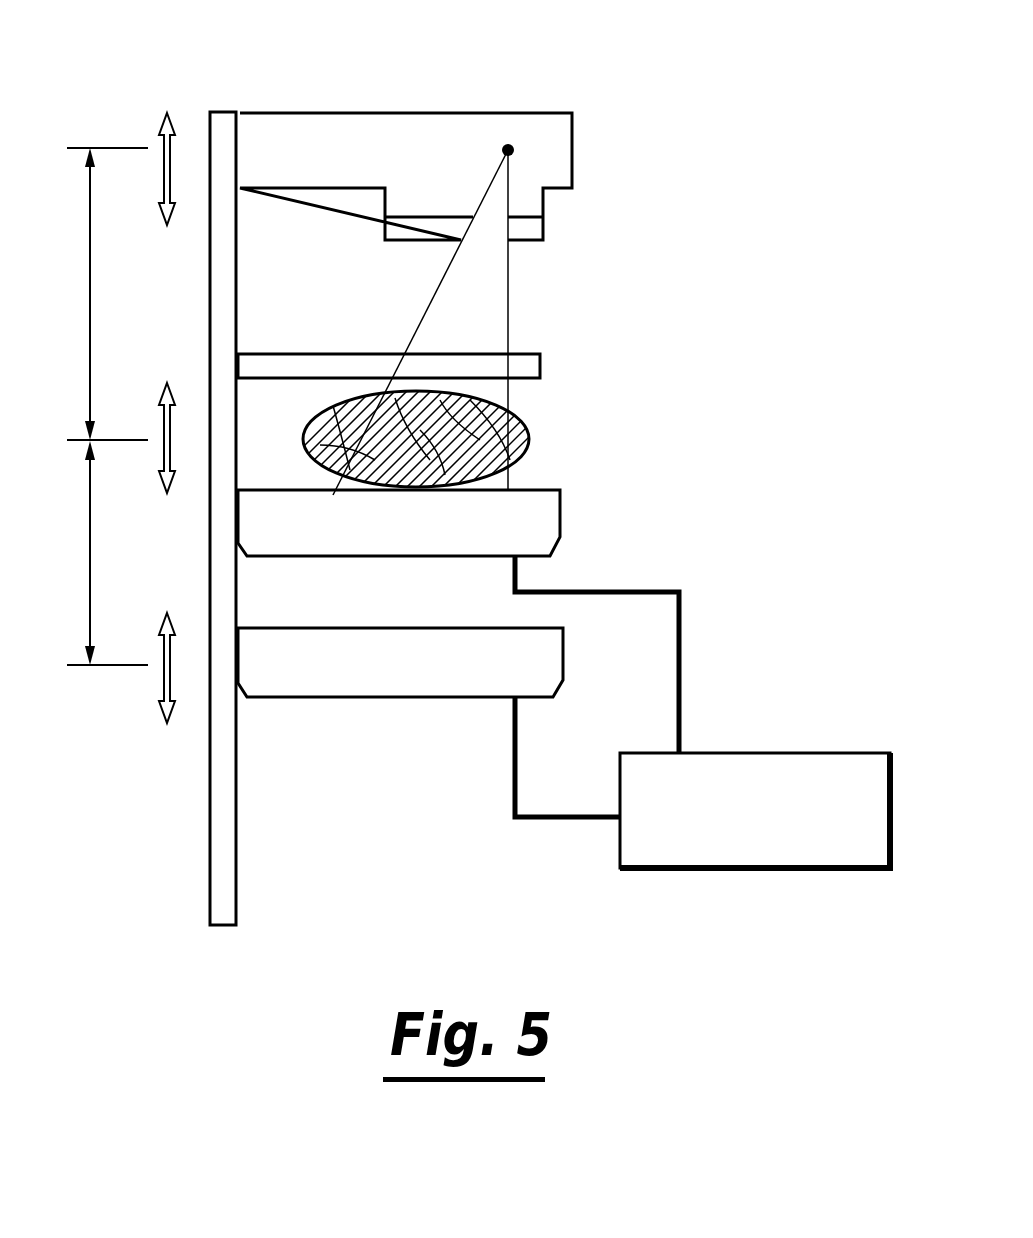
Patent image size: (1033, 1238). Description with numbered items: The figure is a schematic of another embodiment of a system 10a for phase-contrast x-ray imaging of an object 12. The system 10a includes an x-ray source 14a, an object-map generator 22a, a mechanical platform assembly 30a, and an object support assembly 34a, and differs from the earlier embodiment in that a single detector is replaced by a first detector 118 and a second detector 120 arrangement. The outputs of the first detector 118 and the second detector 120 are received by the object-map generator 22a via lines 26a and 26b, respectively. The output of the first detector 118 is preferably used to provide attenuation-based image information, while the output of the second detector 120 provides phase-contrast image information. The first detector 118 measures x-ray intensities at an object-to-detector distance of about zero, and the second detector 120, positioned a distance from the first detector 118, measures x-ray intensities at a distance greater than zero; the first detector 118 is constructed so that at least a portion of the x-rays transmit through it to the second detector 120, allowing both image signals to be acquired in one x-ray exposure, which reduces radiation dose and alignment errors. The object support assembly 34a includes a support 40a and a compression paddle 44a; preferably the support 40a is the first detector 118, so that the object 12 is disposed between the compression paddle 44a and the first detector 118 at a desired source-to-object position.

The system for phase-contrast imaging 10a is at (178, 65).
The object 12 is at (522, 436).
The x-ray source 14a is at (596, 98).
The object-map generator 22a is at (752, 870).
The line 26a is at (512, 768).
The line 26b is at (681, 669).
The mechanical platform assembly 30a is at (208, 297).
The object support assembly 34a is at (624, 326).
The support 40a is at (535, 350).
The compression paddle 44a is at (562, 497).
The first detector 118 is at (562, 537).
The second detector 120 is at (397, 699).